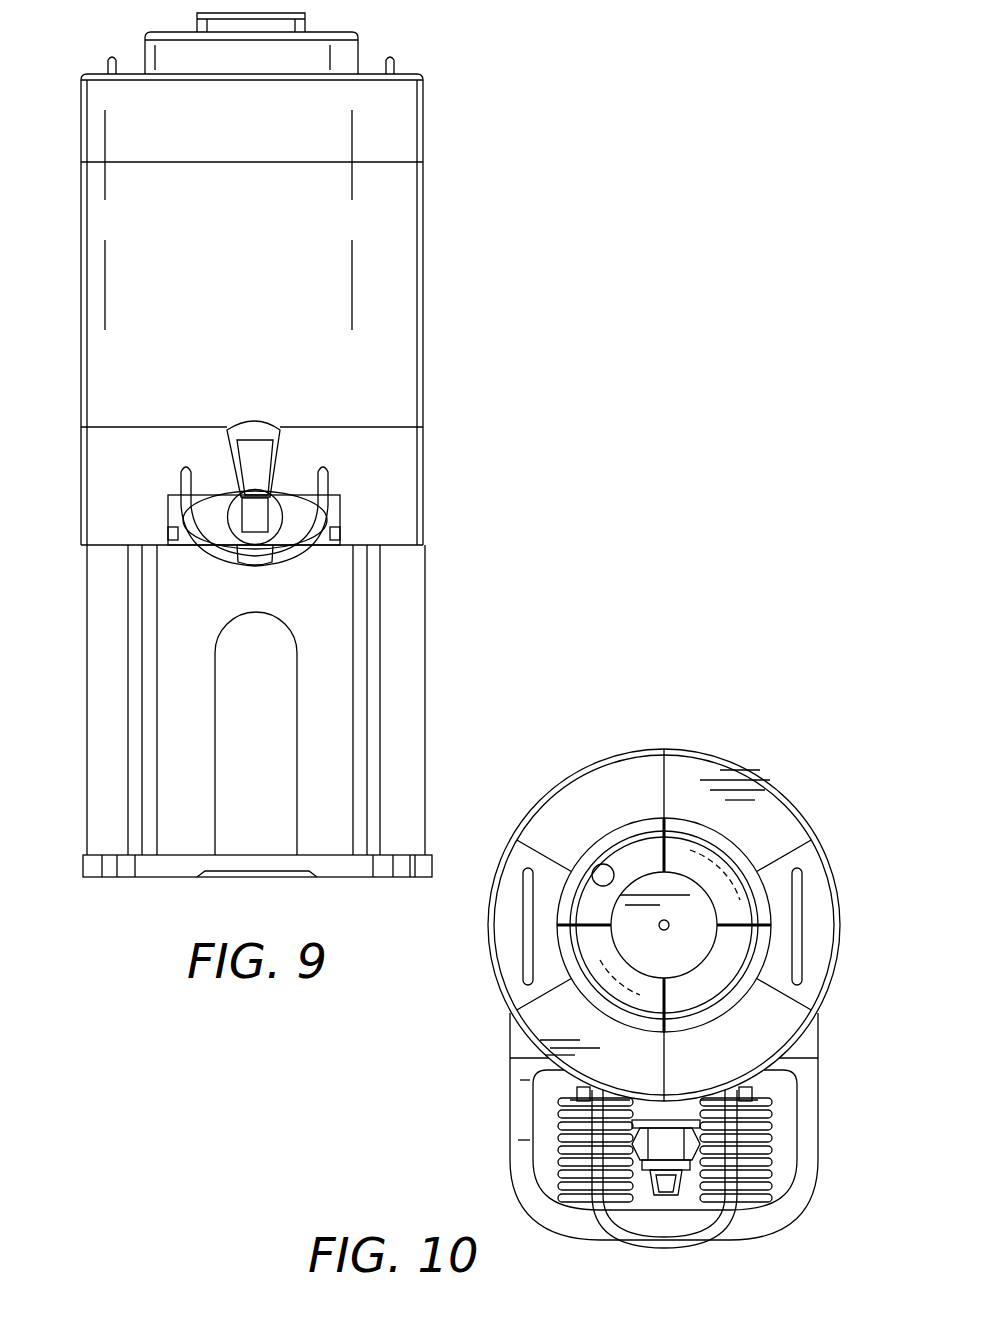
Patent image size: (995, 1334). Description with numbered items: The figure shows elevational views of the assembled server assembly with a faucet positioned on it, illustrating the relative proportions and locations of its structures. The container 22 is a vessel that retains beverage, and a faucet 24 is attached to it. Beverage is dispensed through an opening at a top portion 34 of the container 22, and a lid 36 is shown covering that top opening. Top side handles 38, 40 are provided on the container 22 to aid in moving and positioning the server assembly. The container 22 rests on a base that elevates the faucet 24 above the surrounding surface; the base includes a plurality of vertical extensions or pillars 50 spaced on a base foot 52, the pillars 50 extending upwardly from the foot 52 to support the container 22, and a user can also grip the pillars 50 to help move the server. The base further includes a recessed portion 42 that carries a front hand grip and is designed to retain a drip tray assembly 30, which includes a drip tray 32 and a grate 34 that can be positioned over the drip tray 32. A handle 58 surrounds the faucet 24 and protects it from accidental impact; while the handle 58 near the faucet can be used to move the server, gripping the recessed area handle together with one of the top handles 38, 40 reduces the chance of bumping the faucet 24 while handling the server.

In FIG. 9, the container 22 is at (460, 258).
In FIG. 10, the container 22 is at (795, 775).
In FIG. 9, the faucet 24 is at (272, 495).
In FIG. 10, the faucet 24 is at (655, 1190).
In FIG. 9, the drip tray assembly 30 is at (95, 818).
In FIG. 10, the drip tray assembly 30 is at (490, 1158).
In FIG. 10, the drip tray 32 is at (755, 1222).
In FIG. 9, the top portion 34 is at (81, 118).
In FIG. 10, the top portion 34 is at (780, 1088).
In FIG. 9, the lid 36 is at (145, 55).
In FIG. 10, the lid 36 is at (627, 820).
In FIG. 10, the top side handle 38 is at (520, 930).
In FIG. 10, the top side handle 40 is at (802, 890).
In FIG. 9, the recessed portion 42 is at (260, 878).
In FIG. 10, the recessed portion 42 is at (822, 1140).
In FIG. 9, the pillars 50 is at (95, 638).
In FIG. 9, the base foot 52 is at (83, 866).
In FIG. 9, the handle 58 is at (325, 513).
In FIG. 10, the handle 58 is at (600, 1130).